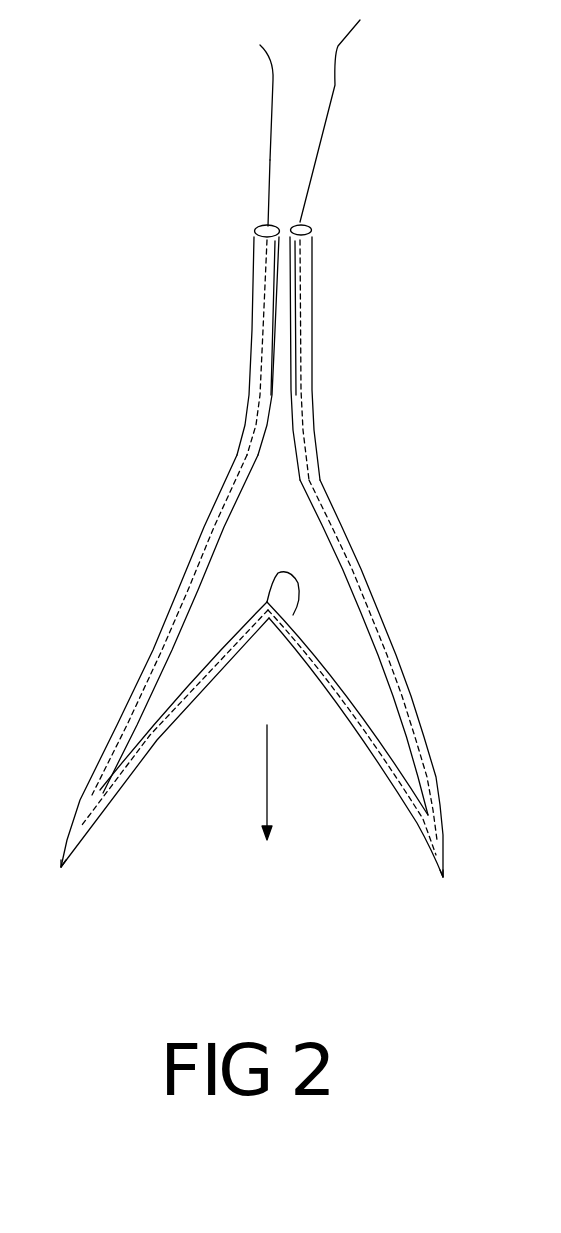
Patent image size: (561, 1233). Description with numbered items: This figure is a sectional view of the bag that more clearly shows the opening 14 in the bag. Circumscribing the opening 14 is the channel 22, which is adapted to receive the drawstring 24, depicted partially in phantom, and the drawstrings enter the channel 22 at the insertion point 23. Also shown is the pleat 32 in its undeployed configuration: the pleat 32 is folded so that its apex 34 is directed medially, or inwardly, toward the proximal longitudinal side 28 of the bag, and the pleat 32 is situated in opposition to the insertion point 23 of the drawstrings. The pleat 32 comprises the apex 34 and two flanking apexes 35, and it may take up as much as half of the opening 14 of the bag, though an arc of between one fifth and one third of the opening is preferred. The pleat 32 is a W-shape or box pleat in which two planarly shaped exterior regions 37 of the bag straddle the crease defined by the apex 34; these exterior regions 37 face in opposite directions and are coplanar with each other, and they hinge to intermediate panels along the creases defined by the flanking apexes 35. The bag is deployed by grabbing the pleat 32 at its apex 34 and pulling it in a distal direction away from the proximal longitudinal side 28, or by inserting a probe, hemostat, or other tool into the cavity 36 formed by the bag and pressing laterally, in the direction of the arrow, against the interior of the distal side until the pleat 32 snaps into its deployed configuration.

The opening 14 is at (310, 503).
The channel 22 is at (263, 228).
The insertion point 23 is at (273, 224).
The drawstring 24 is at (280, 83).
The proximal longitudinal side 28 is at (328, 232).
The pleat 32 is at (168, 735).
The apex 34 is at (293, 615).
The flanking apexes 35 is at (61, 867).
The cavity 36 is at (263, 535).
The exterior regions 37 is at (153, 638).